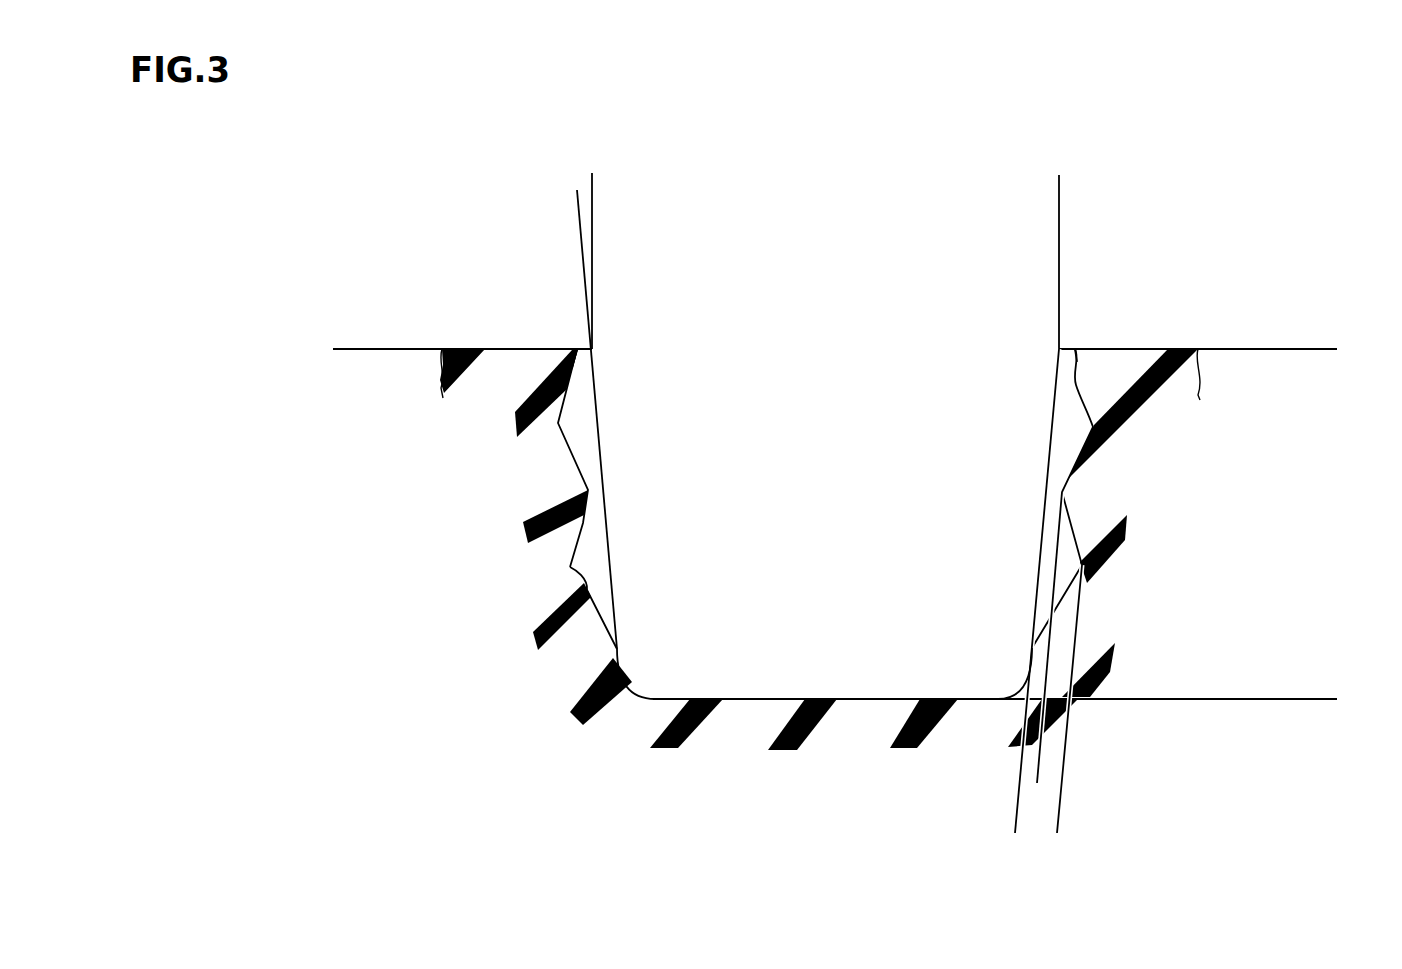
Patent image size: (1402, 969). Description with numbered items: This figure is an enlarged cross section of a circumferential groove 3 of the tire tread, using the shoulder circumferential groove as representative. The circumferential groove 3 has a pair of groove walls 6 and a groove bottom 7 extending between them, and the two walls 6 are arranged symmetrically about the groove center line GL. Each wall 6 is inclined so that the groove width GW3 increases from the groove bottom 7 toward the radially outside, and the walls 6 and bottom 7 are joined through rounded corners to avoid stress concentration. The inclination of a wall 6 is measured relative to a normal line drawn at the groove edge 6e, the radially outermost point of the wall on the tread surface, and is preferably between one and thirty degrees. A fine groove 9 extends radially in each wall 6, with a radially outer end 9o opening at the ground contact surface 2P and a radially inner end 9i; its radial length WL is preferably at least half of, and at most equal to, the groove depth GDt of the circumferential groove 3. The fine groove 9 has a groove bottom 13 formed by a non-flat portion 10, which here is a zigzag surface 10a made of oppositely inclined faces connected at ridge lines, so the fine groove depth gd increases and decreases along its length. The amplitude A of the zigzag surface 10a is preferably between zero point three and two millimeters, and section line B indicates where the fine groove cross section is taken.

The ground contact surface 2P is at (500, 349).
The circumferential groove 3 is at (942, 545).
The fine groove 9 is at (586, 426).
The radially outer end 9o is at (577, 348).
The groove edge 6e is at (597, 348).
The groove wall 6 is at (603, 493).
The non-flat portion 10 is at (588, 523).
The zigzag surface 10a is at (1072, 462).
The groove bottom 13 is at (573, 571).
The radially inner end 9i is at (617, 650).
The groove bottom 7 is at (735, 699).
The groove width GW3 is at (1059, 180).
The radial length WL is at (617, 649).
The groove depth GDt is at (1332, 349).
The amplitude A is at (1093, 783).
The groove depth gd is at (980, 832).
The center line GL is at (825, 770).
The line B- B is at (528, 505).